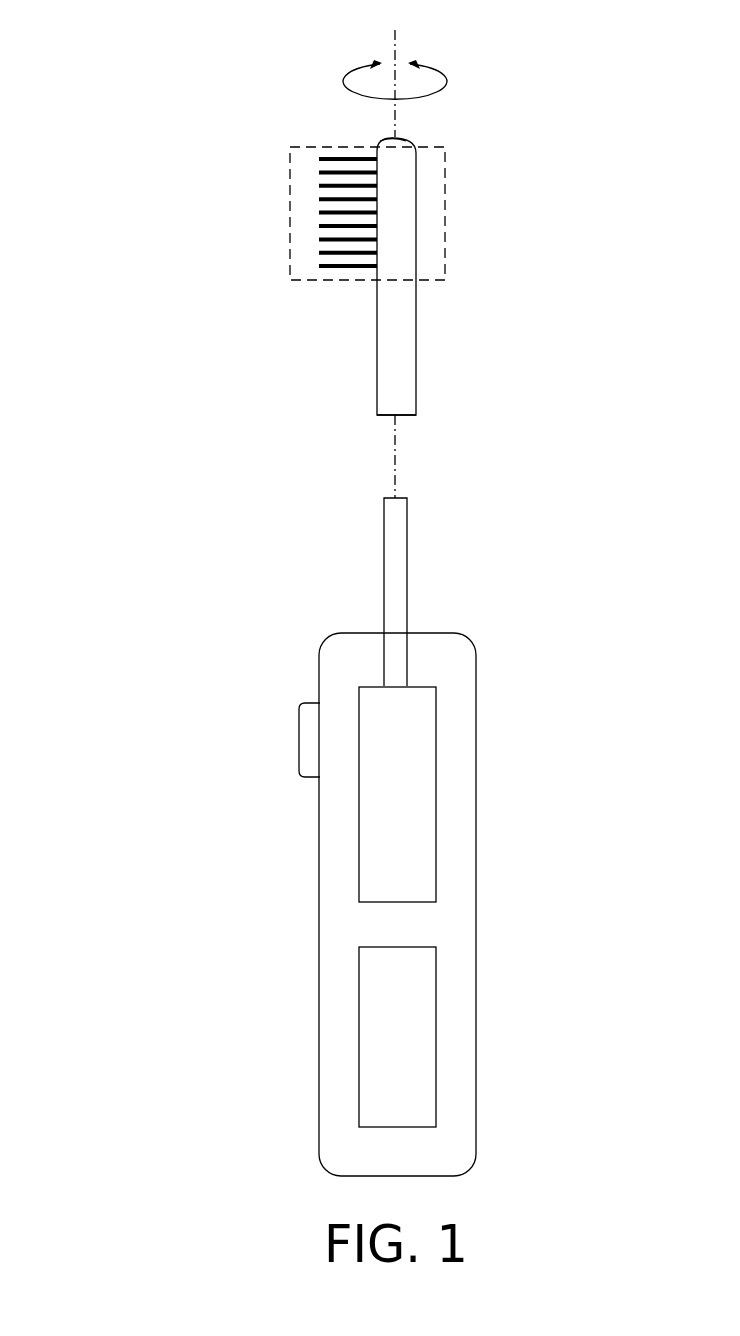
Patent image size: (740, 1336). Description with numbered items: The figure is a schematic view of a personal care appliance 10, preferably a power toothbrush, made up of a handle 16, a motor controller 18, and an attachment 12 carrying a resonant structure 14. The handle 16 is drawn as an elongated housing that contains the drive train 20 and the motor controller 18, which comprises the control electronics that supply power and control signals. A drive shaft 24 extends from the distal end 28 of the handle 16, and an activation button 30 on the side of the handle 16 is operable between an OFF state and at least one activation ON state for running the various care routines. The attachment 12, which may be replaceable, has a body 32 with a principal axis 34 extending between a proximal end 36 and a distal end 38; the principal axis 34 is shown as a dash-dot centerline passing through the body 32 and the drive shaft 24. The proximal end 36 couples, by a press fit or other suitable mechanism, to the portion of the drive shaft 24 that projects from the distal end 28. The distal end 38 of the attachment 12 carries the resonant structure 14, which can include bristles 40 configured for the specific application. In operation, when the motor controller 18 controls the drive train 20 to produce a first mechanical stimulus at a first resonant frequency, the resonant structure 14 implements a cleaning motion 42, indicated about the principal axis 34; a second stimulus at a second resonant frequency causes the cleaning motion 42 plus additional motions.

The personal care appliance 10 is at (148, 78).
The attachment 12 is at (494, 253).
The resonant structure 14 is at (290, 205).
The handle 16 is at (526, 910).
The motor controller 18 is at (436, 1037).
The drive train 20 is at (436, 795).
The drive shaft 24 is at (407, 558).
The distal end of handle 28 is at (443, 633).
The activation button 30 is at (299, 741).
The body 32 is at (416, 345).
The principal axis 34 is at (395, 444).
The proximal end 36 is at (410, 415).
The distal end 38 is at (391, 137).
The bristles 40 is at (345, 268).
The cleaning motion 42 is at (447, 80).